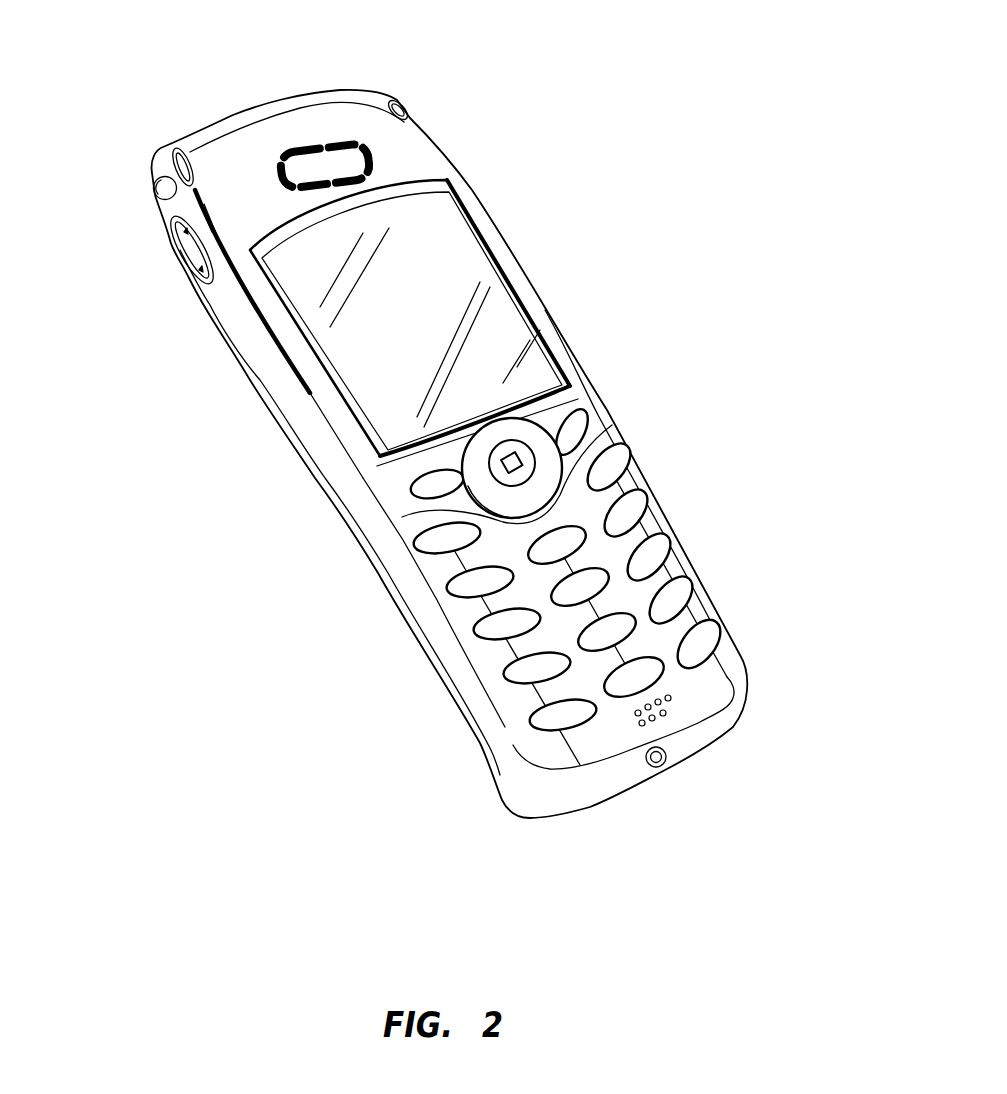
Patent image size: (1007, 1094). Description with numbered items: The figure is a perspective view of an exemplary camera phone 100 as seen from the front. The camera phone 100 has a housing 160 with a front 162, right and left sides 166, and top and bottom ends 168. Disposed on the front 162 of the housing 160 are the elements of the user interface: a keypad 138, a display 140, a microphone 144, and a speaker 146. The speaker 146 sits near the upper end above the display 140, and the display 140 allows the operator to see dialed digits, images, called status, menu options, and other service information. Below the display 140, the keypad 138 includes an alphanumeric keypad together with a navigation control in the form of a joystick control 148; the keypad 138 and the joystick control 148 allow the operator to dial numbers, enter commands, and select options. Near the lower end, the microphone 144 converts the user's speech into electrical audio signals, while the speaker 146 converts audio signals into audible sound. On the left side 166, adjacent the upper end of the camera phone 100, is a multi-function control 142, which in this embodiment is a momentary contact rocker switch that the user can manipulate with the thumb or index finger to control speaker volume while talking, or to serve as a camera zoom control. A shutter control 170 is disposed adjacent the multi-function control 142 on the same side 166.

The camera phone 100 is at (708, 174).
The keypad 138 is at (690, 492).
The display 140 is at (350, 369).
The multi-function control 142 is at (182, 248).
The microphone 144 is at (675, 706).
The speaker 146 is at (328, 163).
The joystick control 148 is at (548, 468).
The housing 160 is at (313, 573).
The front 162 is at (247, 163).
The side 166 is at (590, 377).
The top and bottom ends 168 is at (293, 97).
The shutter control 170 is at (153, 187).